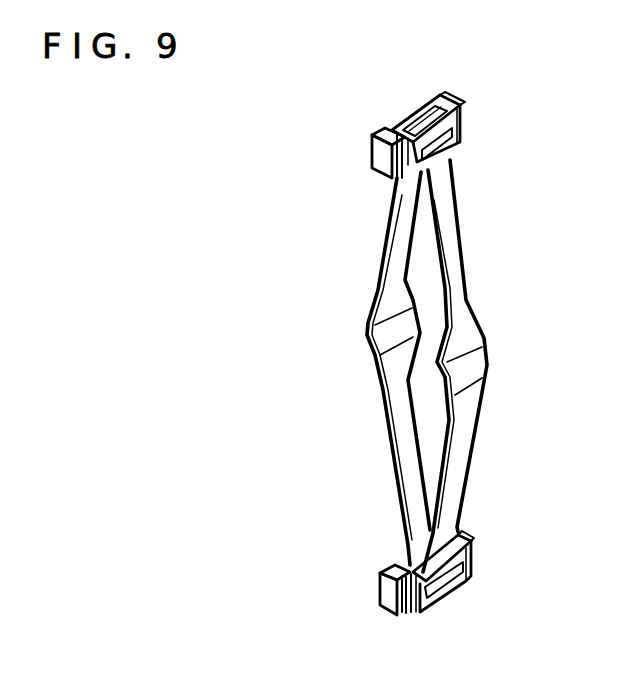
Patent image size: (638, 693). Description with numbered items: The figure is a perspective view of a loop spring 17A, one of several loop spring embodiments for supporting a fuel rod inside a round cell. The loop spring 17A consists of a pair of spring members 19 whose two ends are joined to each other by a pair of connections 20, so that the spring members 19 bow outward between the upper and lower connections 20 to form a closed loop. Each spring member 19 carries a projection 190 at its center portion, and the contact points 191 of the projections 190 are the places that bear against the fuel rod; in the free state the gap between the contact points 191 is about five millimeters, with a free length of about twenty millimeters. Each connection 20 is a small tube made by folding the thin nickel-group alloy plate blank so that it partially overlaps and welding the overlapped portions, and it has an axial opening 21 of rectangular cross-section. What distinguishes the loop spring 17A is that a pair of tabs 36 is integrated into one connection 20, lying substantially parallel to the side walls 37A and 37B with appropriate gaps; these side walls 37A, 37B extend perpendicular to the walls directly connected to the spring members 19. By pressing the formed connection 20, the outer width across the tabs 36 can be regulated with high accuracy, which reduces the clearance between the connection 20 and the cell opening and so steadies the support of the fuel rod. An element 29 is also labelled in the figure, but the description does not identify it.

The loop spring 17A is at (343, 463).
The spring member 19 is at (457, 268).
The projection 190 is at (473, 330).
The contact point 191 is at (465, 370).
The connection 20 is at (385, 127).
The axial opening 21 is at (422, 107).
The slot 29 is at (449, 166).
The tab 36 is at (463, 121).
The side wall 37A is at (460, 95).
The side wall 37B is at (385, 170).